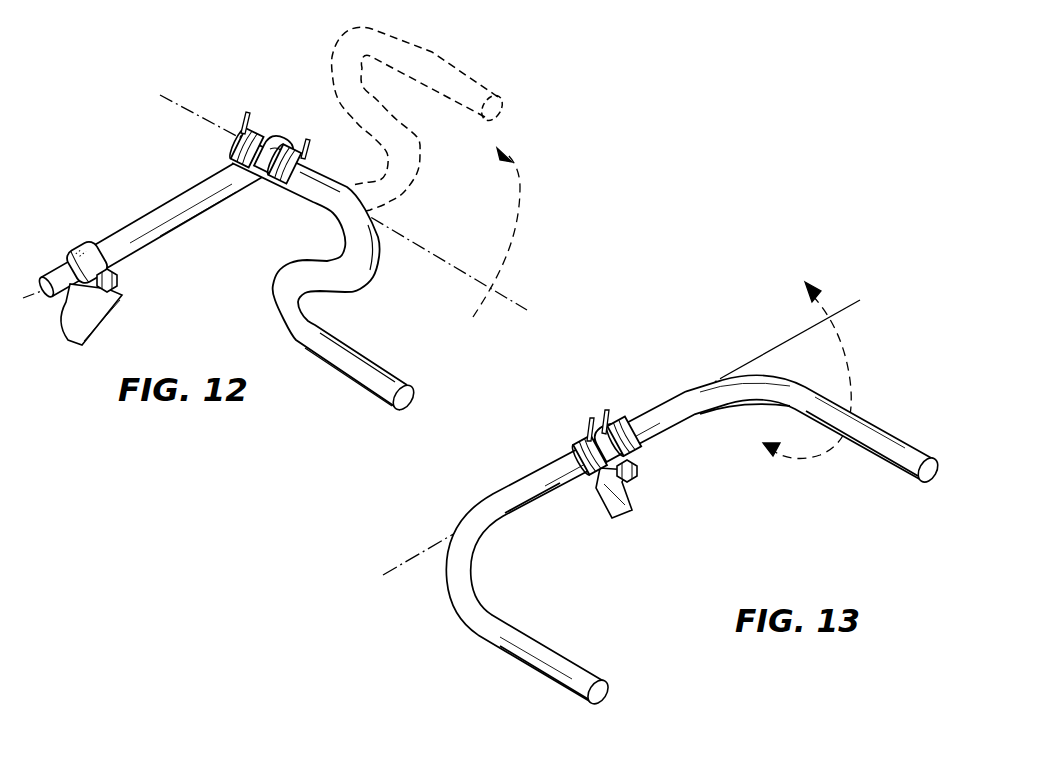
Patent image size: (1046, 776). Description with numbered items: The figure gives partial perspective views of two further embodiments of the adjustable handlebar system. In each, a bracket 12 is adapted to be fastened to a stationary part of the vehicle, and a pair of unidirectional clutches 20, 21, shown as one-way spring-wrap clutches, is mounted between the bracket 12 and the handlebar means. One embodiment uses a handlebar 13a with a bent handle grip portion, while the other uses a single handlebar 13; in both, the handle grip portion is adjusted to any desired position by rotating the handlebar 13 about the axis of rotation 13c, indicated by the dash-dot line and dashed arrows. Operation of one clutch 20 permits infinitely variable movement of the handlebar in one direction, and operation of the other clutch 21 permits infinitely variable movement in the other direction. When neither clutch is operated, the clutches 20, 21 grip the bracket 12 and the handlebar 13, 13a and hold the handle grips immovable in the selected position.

In FIG. 12, the bracket 12 is at (98, 305).
In FIG. 13, the bracket 12 is at (628, 487).
In FIG. 13, the handlebar 13 is at (690, 383).
In FIG. 12, the handlebar 13a is at (347, 276).
In FIG. 12, the axis of rotation 13c is at (167, 213).
In FIG. 13, the axis of rotation 13c is at (418, 556).
In FIG. 12, the unidirectional clutch 20 is at (292, 156).
In FIG. 13, the unidirectional clutch 20 is at (617, 427).
In FIG. 12, the unidirectional clutch 21 is at (258, 131).
In FIG. 13, the unidirectional clutch 21 is at (587, 446).